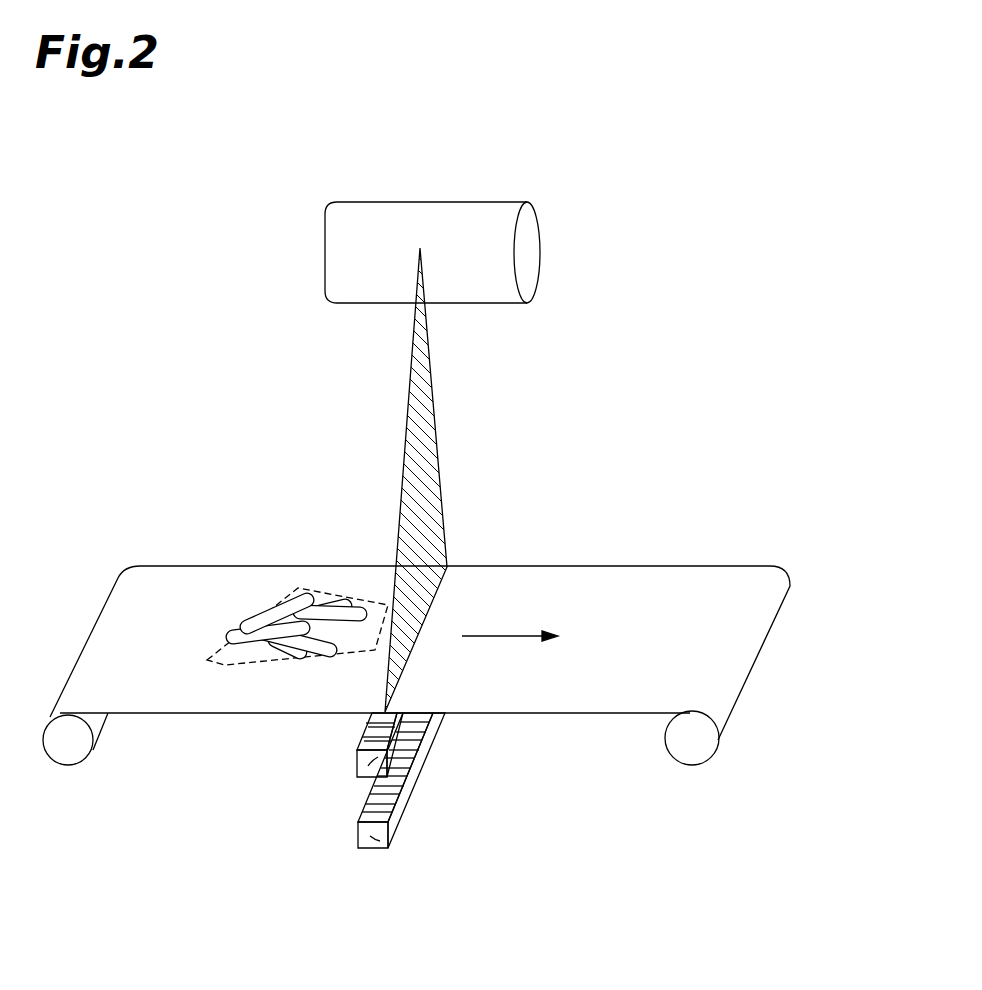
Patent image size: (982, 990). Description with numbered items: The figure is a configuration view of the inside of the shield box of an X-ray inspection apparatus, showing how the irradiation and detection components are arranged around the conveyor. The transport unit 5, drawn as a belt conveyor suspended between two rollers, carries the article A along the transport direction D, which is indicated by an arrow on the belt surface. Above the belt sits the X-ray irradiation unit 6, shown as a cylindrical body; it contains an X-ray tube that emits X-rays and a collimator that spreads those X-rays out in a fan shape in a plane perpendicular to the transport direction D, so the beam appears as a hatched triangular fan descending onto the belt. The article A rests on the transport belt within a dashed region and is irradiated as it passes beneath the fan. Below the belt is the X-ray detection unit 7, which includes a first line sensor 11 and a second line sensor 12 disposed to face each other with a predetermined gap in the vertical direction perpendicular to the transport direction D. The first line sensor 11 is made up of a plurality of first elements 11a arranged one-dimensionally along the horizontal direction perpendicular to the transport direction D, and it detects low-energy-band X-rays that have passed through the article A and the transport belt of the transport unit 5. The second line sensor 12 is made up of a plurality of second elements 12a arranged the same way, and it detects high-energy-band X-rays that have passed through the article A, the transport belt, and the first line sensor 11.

The transport unit 5 is at (175, 583).
The X-ray irradiation unit 6 is at (483, 213).
The X-ray detection unit 7 is at (375, 870).
The first line sensor 11 is at (333, 752).
The first elements 11a is at (371, 766).
The second line sensor 12 is at (434, 784).
The second elements 12a is at (382, 841).
The article A is at (296, 593).
The transport direction D is at (508, 635).